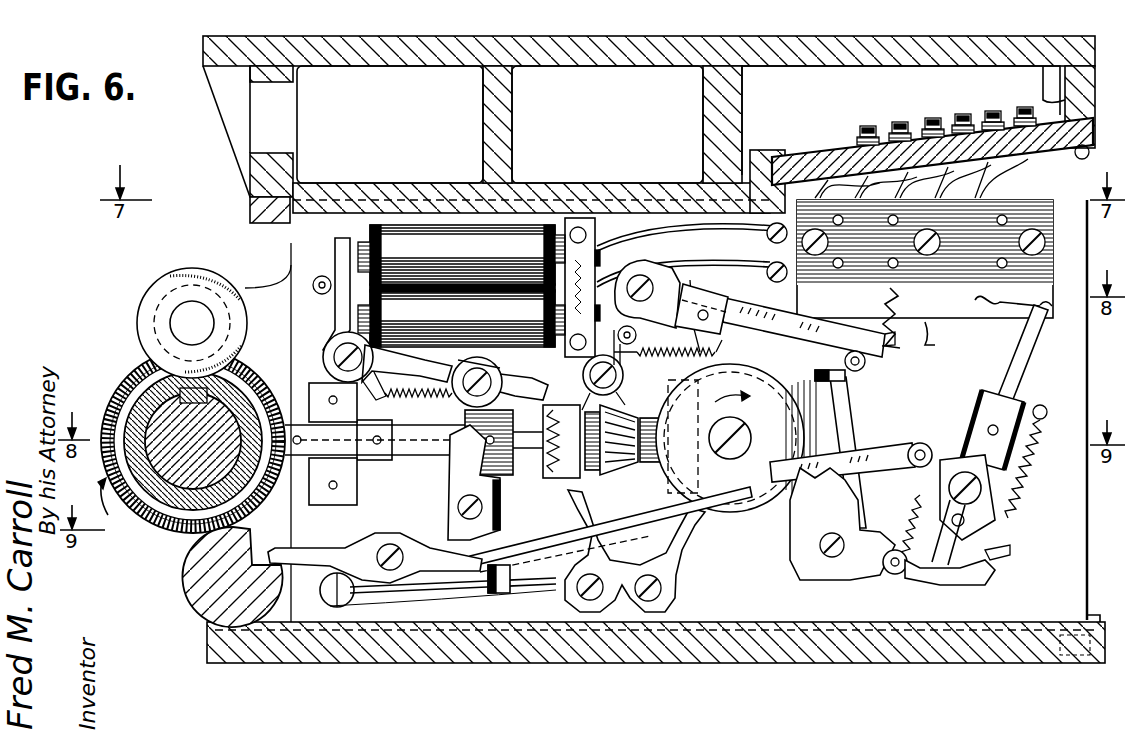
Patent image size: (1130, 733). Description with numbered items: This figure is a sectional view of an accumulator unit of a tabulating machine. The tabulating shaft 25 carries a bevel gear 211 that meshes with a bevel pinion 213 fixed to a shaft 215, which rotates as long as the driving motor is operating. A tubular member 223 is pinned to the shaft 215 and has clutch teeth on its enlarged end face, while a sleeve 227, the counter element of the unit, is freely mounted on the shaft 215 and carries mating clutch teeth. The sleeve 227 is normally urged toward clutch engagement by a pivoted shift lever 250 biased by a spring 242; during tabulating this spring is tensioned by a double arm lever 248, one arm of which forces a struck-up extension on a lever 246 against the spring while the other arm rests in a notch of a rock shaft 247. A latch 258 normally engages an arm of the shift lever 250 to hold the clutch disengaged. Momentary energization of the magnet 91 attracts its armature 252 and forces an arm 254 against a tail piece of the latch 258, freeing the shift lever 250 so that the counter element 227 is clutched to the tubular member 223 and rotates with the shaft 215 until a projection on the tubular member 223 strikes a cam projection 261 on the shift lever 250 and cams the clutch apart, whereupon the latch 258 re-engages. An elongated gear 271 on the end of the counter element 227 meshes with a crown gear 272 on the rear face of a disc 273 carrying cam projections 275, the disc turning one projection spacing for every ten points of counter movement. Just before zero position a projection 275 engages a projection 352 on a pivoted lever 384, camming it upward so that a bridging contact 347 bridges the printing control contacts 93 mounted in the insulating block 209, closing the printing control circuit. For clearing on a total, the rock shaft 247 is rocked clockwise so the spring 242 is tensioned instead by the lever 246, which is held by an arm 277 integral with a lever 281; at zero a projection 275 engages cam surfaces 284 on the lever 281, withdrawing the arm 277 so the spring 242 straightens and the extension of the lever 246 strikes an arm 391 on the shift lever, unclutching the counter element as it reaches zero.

The magnet 91 is at (500, 238).
The armature 252 is at (291, 243).
The arm 254 is at (418, 368).
The bevel pinion 213 is at (276, 418).
The tabulating shaft 25 is at (133, 387).
The bevel gear 211 is at (162, 520).
The latch 258 is at (508, 393).
The cam projection 261 is at (546, 412).
The elongated gear 271 is at (640, 400).
The crown gear 272 is at (745, 372).
The projection 352 is at (727, 323).
The printing control contacts 93 is at (885, 298).
The pivoted lever 384 is at (809, 334).
The bridging contact 347 is at (900, 312).
The cam surfaces 284 is at (843, 377).
The cam projections 275 is at (845, 390).
The disc 273 is at (773, 423).
The lever 281 is at (858, 507).
The shaft 215 is at (410, 455).
The tubular member 223 is at (522, 468).
The sleeve 227 is at (607, 478).
The double arm lever 248 is at (418, 552).
The rock shaft 247 is at (197, 589).
The spring 242 is at (407, 600).
The arm 391 is at (508, 563).
The shift lever 250 is at (655, 540).
The lever 246 is at (686, 586).
The arm 277 is at (790, 520).
The insulating block 209 is at (1010, 212).